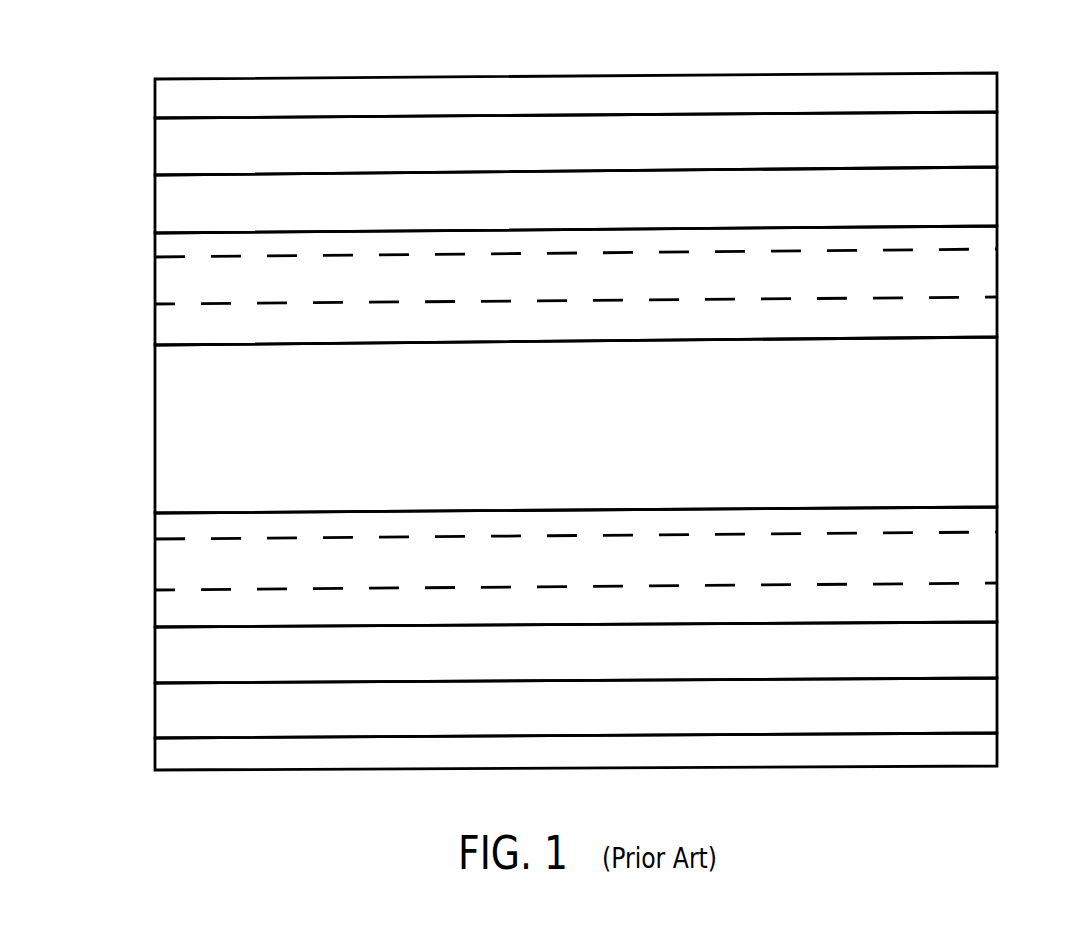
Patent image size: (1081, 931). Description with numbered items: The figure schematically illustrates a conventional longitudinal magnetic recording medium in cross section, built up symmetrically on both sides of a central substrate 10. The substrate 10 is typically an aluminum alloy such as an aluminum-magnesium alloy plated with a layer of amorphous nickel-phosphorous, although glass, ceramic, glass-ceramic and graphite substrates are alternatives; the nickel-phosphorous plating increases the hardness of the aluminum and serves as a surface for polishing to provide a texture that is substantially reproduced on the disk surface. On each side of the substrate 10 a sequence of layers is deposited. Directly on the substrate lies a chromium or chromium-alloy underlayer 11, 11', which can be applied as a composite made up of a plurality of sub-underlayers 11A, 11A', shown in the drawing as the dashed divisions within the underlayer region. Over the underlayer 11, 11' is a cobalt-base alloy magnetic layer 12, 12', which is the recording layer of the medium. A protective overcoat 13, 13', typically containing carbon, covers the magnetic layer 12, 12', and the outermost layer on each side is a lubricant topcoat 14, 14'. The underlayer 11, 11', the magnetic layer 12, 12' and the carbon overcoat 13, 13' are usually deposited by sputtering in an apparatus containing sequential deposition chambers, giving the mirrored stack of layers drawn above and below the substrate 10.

The substrate 10 is at (600, 433).
The Cr underlayer 11 is at (608, 285).
The Cr underlayer 11' is at (611, 567).
The sub-underlayers 11A is at (521, 287).
The sub-underlayers 11A' is at (525, 565).
The magnetic layer 12 is at (576, 200).
The magnetic layer 12' is at (576, 652).
The protective overcoat 13 is at (576, 143).
The protective overcoat 13' is at (576, 708).
The lubricant topcoat 14 is at (576, 95).
The lubricant topcoat 14' is at (576, 751).